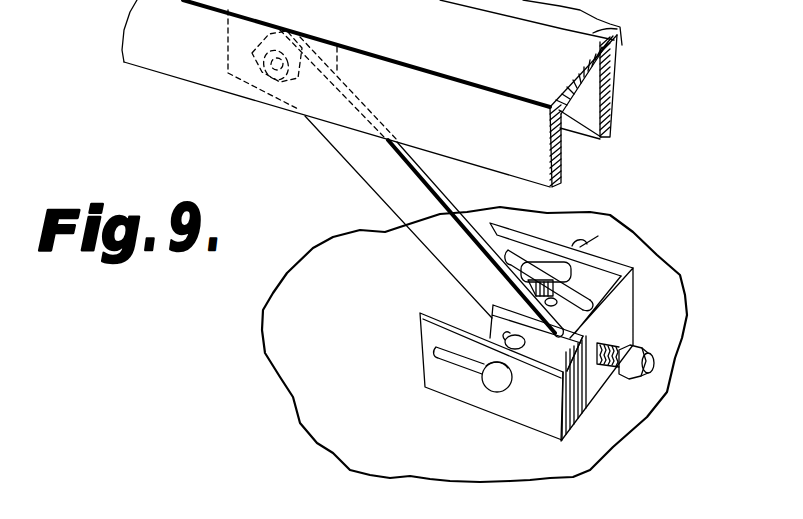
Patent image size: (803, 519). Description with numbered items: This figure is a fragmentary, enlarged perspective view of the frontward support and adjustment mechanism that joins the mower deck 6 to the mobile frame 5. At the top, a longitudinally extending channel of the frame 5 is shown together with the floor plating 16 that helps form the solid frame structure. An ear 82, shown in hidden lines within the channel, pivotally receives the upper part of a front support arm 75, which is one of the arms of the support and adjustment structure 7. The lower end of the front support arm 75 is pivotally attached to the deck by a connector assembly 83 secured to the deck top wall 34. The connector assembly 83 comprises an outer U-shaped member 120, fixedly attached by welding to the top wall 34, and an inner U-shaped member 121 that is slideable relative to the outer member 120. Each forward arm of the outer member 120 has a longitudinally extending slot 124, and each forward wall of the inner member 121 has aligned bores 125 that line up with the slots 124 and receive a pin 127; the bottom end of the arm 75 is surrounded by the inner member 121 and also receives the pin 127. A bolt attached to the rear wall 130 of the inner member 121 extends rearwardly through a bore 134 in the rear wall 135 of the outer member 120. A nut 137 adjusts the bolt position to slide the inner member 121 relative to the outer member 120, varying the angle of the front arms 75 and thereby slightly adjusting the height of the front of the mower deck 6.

The mobile frame 5 is at (610, 88).
The floor plating 16 is at (620, 32).
The ear 82 is at (228, 60).
The support and adjustment structure 7 is at (438, 179).
The front support arm 75 is at (328, 140).
The connector assembly 83 is at (380, 355).
The outer U-shaped member 120 is at (554, 367).
The inner U-shaped member 121 is at (633, 268).
The longitudinally extending slot 124 is at (469, 386).
The aligned bore 125 is at (453, 327).
The pin 127 is at (494, 390).
The rear wall of the inner member 130 is at (590, 312).
The bore 134 is at (572, 327).
The rear wall of the outer member 135 is at (585, 395).
The nut 137 is at (646, 349).
The top wall 34 is at (647, 397).
The mower deck 6 is at (600, 441).